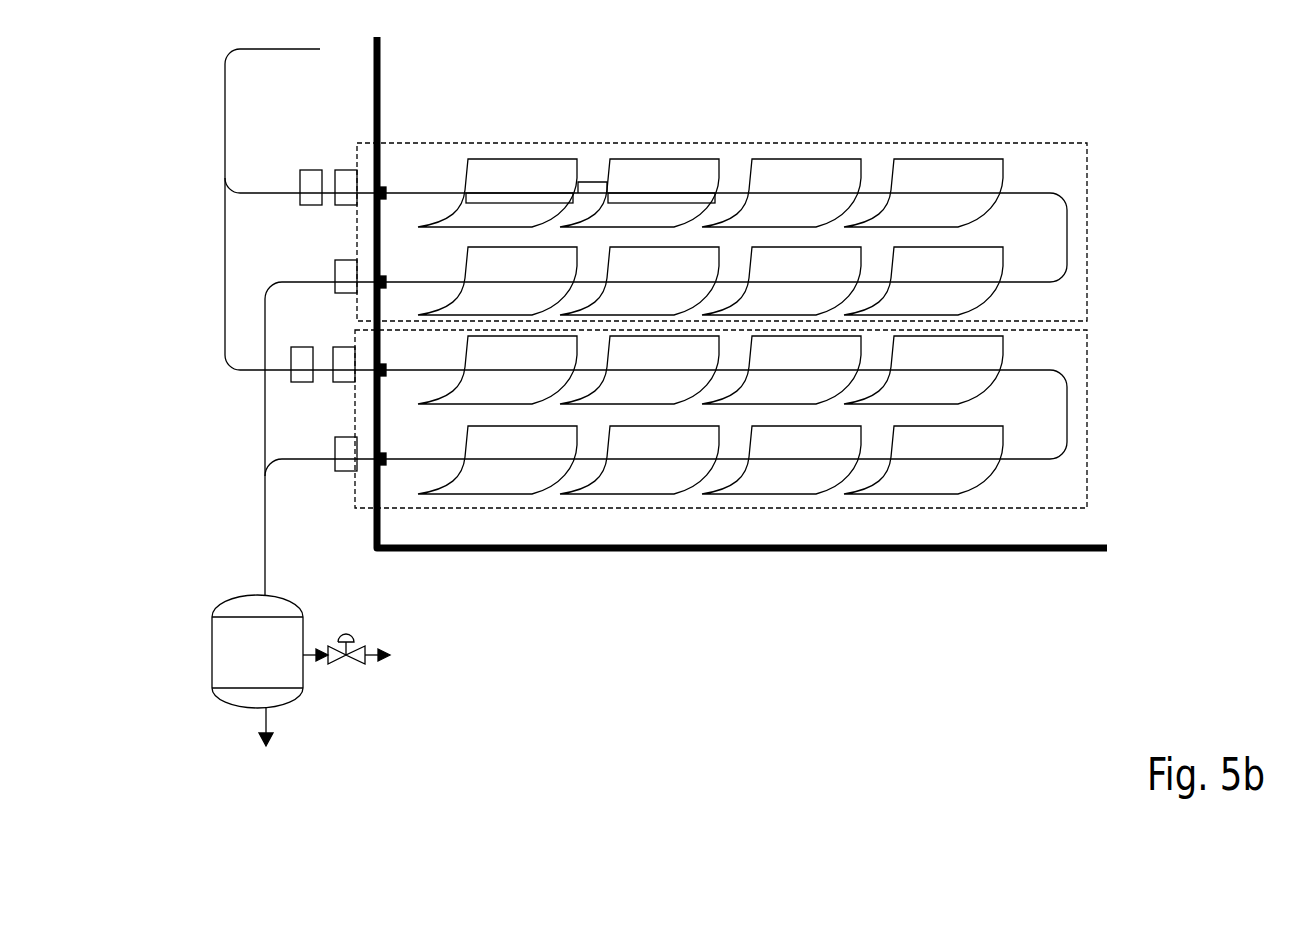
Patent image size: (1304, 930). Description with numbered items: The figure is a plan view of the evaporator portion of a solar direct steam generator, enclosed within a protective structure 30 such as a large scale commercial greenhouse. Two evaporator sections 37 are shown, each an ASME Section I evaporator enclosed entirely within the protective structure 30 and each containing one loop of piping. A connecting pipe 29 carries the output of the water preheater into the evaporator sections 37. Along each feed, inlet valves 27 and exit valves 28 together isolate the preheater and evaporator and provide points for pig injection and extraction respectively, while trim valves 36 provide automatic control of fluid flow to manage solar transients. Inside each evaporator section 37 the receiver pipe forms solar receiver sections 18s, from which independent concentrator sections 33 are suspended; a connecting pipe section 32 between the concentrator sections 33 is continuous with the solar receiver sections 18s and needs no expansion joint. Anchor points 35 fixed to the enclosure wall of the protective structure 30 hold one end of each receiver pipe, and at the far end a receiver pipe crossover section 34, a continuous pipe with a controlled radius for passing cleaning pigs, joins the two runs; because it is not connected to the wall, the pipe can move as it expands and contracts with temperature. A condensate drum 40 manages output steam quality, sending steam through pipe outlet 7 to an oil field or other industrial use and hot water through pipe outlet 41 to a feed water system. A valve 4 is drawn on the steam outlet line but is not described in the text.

The connecting pipe 29 is at (301, 200).
The protective structure 30 is at (688, 554).
The evaporator section 37 is at (355, 139).
The trim valve 36 is at (307, 167).
The inlet valve 27 is at (344, 167).
The exit valve 28 is at (341, 257).
The anchor point 35 is at (386, 204).
The solar receiver section 18s is at (518, 203).
The concentrator section 33 is at (590, 184).
The connecting pipe section 32 is at (591, 182).
The receiver pipe crossover section 34 is at (1069, 240).
The condensate drum 40 is at (232, 597).
The valve 4 is at (337, 631).
The pipe outlet 7 is at (378, 645).
The pipe outlet 41 is at (279, 740).